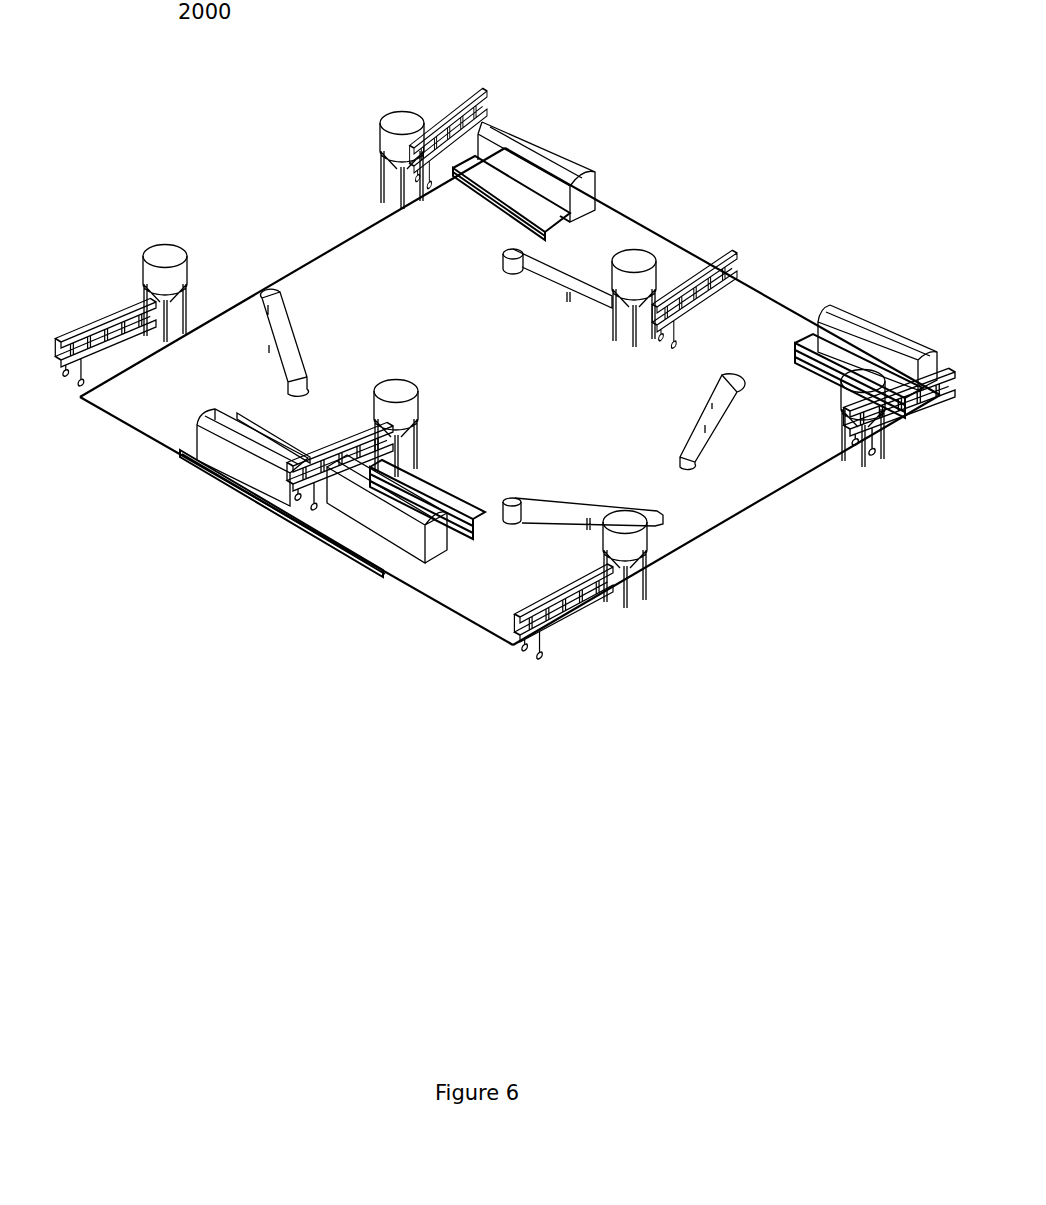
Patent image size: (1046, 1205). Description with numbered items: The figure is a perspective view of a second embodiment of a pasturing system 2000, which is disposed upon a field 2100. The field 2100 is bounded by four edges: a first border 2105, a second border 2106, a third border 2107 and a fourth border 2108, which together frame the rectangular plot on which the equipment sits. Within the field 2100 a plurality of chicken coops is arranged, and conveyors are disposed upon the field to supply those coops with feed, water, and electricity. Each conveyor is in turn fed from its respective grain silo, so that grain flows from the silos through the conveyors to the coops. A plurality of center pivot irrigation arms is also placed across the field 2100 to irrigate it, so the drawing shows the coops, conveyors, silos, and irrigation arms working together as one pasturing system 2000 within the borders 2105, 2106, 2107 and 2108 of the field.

The pasturing system 2000 is at (515, 390).
The field 2100 is at (510, 336).
The first border 2105 is at (636, 227).
The second border 2106 is at (304, 531).
The third border 2107 is at (298, 261).
The fourth border 2108 is at (744, 513).